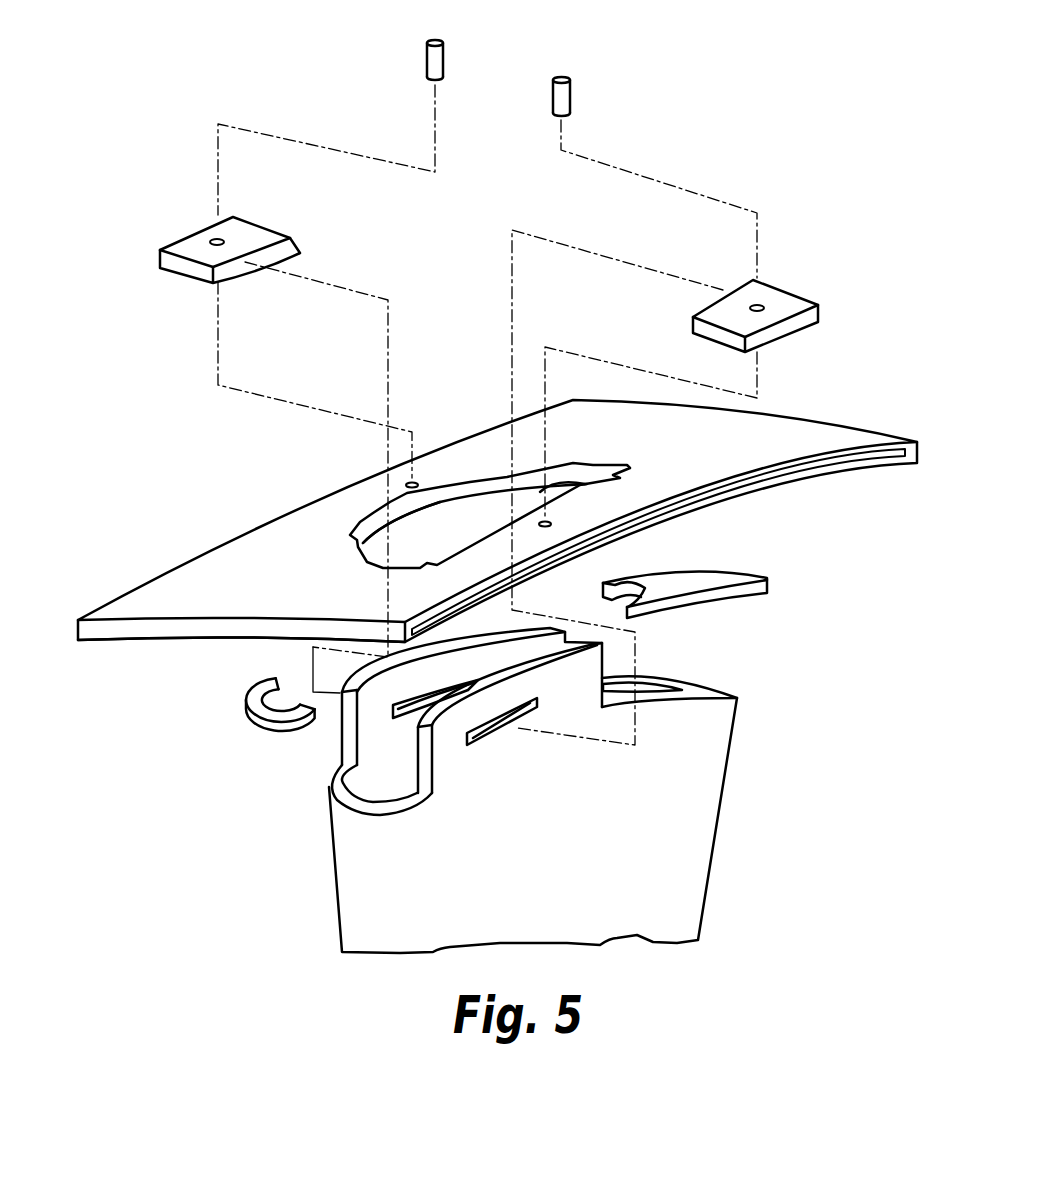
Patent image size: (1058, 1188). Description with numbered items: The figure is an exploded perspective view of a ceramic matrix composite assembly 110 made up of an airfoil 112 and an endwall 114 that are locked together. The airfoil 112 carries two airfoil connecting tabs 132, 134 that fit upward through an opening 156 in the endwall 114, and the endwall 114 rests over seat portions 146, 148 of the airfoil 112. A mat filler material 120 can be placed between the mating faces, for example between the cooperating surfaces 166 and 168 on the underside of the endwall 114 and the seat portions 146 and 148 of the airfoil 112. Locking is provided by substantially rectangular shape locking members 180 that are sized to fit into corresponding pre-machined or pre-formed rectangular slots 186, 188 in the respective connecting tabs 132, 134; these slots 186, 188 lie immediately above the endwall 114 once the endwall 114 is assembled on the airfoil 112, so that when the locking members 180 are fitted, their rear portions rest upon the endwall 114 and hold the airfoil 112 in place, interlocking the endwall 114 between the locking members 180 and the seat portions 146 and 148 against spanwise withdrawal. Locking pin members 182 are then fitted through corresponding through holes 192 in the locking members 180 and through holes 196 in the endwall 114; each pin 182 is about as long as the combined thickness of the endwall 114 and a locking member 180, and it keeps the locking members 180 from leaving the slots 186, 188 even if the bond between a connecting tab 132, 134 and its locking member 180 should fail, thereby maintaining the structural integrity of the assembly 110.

The CMC assembly 110 is at (867, 170).
The airfoil 112 is at (723, 830).
The endwall 114 is at (866, 432).
The mat filler material 120 is at (730, 576).
The airfoil connecting tab 132 is at (618, 624).
The airfoil connecting tab 134 is at (603, 672).
The seat portion 146 is at (330, 790).
The seat portion 148 is at (712, 692).
The opening 156 is at (437, 527).
The cooperating surface 166 is at (172, 641).
The cooperating surface 168 is at (540, 492).
The rectangular shape locking member 180 is at (180, 247).
The locking pin member 182 is at (445, 53).
The slot 186 is at (410, 718).
The slot 188 is at (480, 740).
The through hole 192 is at (212, 236).
The through hole 196 is at (412, 480).